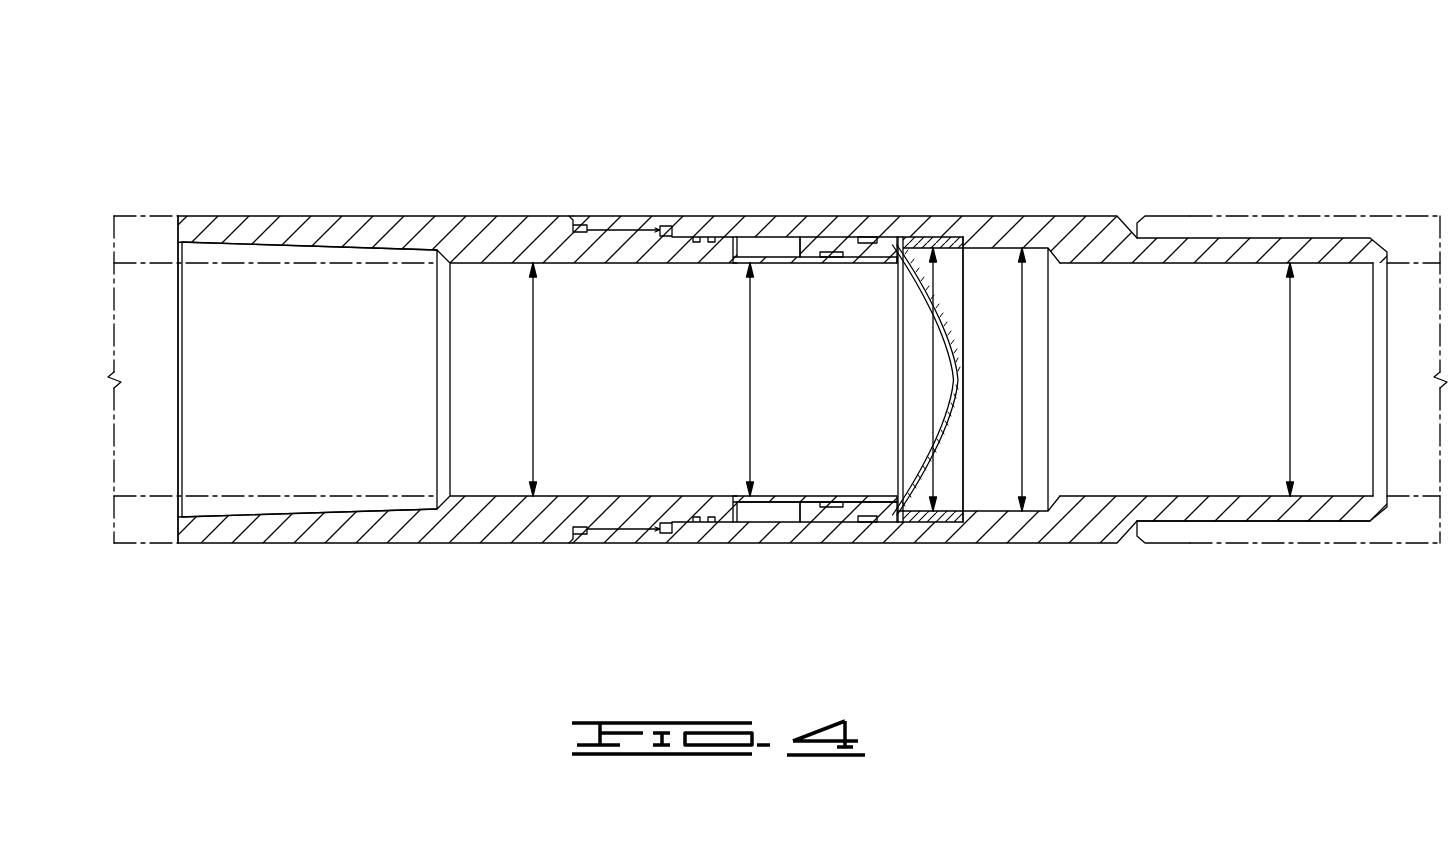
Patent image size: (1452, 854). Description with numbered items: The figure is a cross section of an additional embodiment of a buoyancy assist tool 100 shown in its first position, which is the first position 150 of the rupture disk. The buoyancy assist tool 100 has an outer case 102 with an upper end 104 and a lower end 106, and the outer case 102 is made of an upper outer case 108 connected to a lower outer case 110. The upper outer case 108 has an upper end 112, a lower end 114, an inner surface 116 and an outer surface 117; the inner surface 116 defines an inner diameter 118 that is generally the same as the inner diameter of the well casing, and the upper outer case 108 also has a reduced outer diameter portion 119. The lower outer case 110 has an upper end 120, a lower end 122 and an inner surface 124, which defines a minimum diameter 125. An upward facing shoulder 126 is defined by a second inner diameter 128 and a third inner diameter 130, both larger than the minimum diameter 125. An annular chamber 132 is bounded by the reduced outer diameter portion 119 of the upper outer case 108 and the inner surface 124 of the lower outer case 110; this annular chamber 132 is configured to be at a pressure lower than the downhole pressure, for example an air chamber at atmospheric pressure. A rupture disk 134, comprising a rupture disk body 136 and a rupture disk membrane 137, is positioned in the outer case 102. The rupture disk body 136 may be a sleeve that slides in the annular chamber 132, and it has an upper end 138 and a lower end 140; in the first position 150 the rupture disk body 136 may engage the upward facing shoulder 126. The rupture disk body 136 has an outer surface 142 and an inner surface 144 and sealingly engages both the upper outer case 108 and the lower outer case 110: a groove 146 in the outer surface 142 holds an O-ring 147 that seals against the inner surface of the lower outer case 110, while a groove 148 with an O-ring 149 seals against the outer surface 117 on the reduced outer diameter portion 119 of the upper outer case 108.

The buoyancy assist tool 100 is at (765, 343).
The first position 150 is at (765, 343).
The outer case 102 is at (407, 388).
The upper outer case 108 is at (407, 388).
The upper end 104 is at (145, 423).
The upper end 112 is at (212, 547).
The lower end 106 is at (1294, 370).
The lower end 122 is at (1294, 370).
The lower outer case 110 is at (1098, 538).
The lower end 114 is at (893, 265).
The inner surface 116 is at (495, 485).
The outer surface 117 is at (823, 386).
The inner diameter 118 is at (545, 413).
The reduced outer diameter portion 119 is at (748, 380).
The upper end 120 is at (605, 218).
The inner surface 124 is at (1218, 488).
The minimum outer diameter 125 is at (1285, 395).
The upward facing shoulder 126 is at (1020, 240).
The second inner diameter 128 is at (1050, 395).
The third inner diameter 130 is at (935, 355).
The annular chamber 132 is at (823, 386).
The rupture disk 134 is at (976, 433).
The rupture disk membrane 137 is at (976, 433).
The rupture disk body 136 is at (898, 244).
The upper end 138 is at (780, 530).
The lower end 140 is at (917, 527).
The outer surface 142 is at (848, 505).
The inner surface 144 is at (822, 528).
The groove 146 is at (864, 567).
The O-ring 147 is at (875, 530).
The groove 148 is at (901, 192).
The O-ring 149 is at (835, 250).